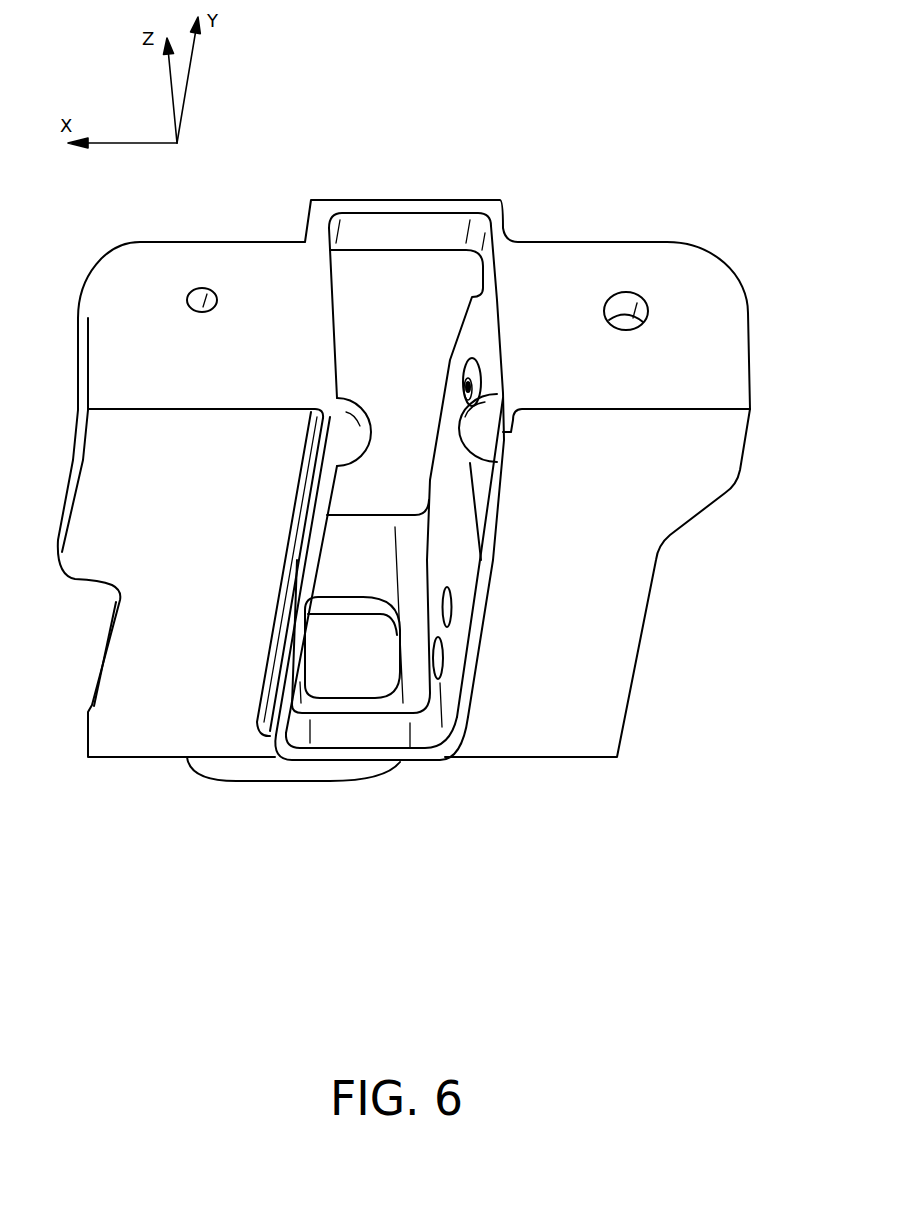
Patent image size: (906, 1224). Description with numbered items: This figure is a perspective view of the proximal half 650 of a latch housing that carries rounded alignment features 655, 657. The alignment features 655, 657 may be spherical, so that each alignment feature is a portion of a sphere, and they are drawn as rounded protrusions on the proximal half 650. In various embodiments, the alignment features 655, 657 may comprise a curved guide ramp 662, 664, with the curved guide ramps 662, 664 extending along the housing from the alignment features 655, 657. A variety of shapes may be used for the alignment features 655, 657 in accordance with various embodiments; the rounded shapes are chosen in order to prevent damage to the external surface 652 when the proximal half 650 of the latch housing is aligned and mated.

The proximal half of a latch housing 650 is at (677, 163).
The external surface 652 is at (387, 762).
The alignment feature 655 is at (352, 410).
The alignment feature 657 is at (489, 395).
The curved guide ramp 662 is at (362, 466).
The curved guide ramp 664 is at (498, 440).